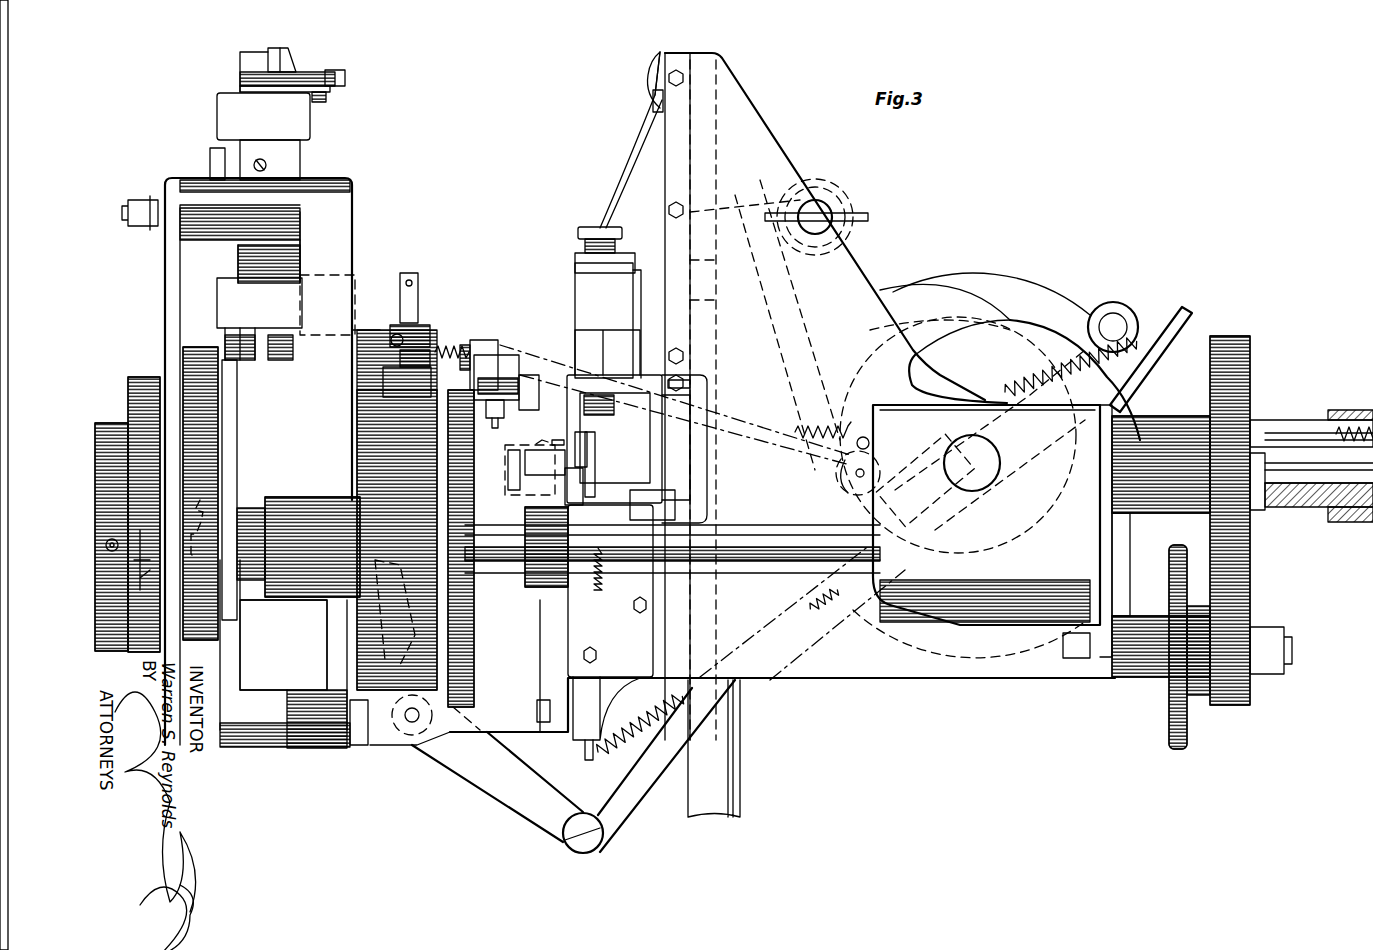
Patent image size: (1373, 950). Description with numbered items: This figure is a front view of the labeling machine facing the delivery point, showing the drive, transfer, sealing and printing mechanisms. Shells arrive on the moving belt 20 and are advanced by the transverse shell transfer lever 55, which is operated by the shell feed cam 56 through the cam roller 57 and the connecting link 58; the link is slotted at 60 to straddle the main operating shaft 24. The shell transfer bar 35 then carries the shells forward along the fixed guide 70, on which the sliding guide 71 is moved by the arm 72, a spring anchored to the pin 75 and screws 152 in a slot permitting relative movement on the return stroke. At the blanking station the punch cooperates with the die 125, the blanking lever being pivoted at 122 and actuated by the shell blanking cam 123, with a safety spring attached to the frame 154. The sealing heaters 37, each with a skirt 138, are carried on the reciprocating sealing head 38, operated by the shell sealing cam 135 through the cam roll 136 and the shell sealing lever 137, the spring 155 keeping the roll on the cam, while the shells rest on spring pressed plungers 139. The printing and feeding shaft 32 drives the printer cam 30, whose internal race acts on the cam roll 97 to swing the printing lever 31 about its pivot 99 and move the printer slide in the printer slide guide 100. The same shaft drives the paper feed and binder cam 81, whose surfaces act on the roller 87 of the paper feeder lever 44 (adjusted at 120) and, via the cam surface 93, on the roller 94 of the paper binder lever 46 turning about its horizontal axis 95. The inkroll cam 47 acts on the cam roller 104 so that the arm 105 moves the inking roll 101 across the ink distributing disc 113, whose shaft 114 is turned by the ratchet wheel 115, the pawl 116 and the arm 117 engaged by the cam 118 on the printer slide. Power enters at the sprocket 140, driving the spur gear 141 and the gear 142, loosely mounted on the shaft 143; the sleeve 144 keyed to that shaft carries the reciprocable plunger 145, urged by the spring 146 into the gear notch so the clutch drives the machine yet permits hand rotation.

The moving belt 20 is at (535, 590).
The main operating shaft 24 is at (985, 470).
The printer cam 30 is at (128, 400).
The printing lever 31 is at (168, 303).
The printing and feeding shaft 32 is at (745, 525).
The shell transfer bar 35 is at (665, 515).
The sealing heater 37 is at (580, 233).
The reciprocating sealing head 38 is at (672, 172).
The paper feeder lever 44 is at (445, 345).
The paper binder lever 46 is at (505, 370).
The inkroll cam 47 is at (190, 365).
The transverse shell transfer lever 55 is at (440, 760).
The shell feed cam 56 is at (1025, 320).
The cam roller 57 is at (1130, 310).
The connecting link 58 is at (1075, 320).
The slot 60 is at (958, 518).
The fixed guide 70 is at (575, 492).
The sliding guide 71 is at (587, 456).
The arm 72 is at (572, 413).
The pin 75 is at (588, 443).
The paper feed and binder cam 81 is at (368, 612).
The roller 87 is at (390, 382).
The cam surface 93 is at (468, 680).
The roller 94 is at (482, 348).
The horizontal axis 95 is at (532, 376).
The cam roll 97 is at (143, 532).
The pivot 99 is at (125, 213).
The printer slide guide 100 is at (230, 119).
The inking roll 101 is at (284, 335).
The cam roller 104 is at (204, 505).
The arm 105 is at (234, 640).
The ink distributing disc 113 is at (262, 335).
The shaft 114 is at (300, 262).
The ratchet wheel 115 is at (242, 80).
The pawl 116 is at (346, 78).
The arm 117 is at (330, 92).
The cam 118 is at (290, 54).
The adjusting means 120 is at (420, 300).
The pivot 122 is at (818, 215).
The shell blanking cam 123 is at (928, 288).
The die 125 is at (690, 385).
The shell sealing cam 135 is at (985, 340).
The cam roll 136 is at (836, 484).
The shell sealing lever 137 is at (790, 302).
The skirt 138 is at (598, 417).
The spring pressed plunger 139 is at (610, 525).
The sprocket 140 is at (1182, 745).
The spur gear 141 is at (1240, 712).
The gear 142 is at (1245, 355).
The shaft 143 is at (1305, 485).
The sleeve 144 is at (1272, 496).
The reciprocable plunger 145 is at (1280, 428).
The spring 146 is at (1347, 408).
The screws 152 is at (561, 458).
The frame 154 is at (1180, 305).
The spring 155 is at (1140, 371).